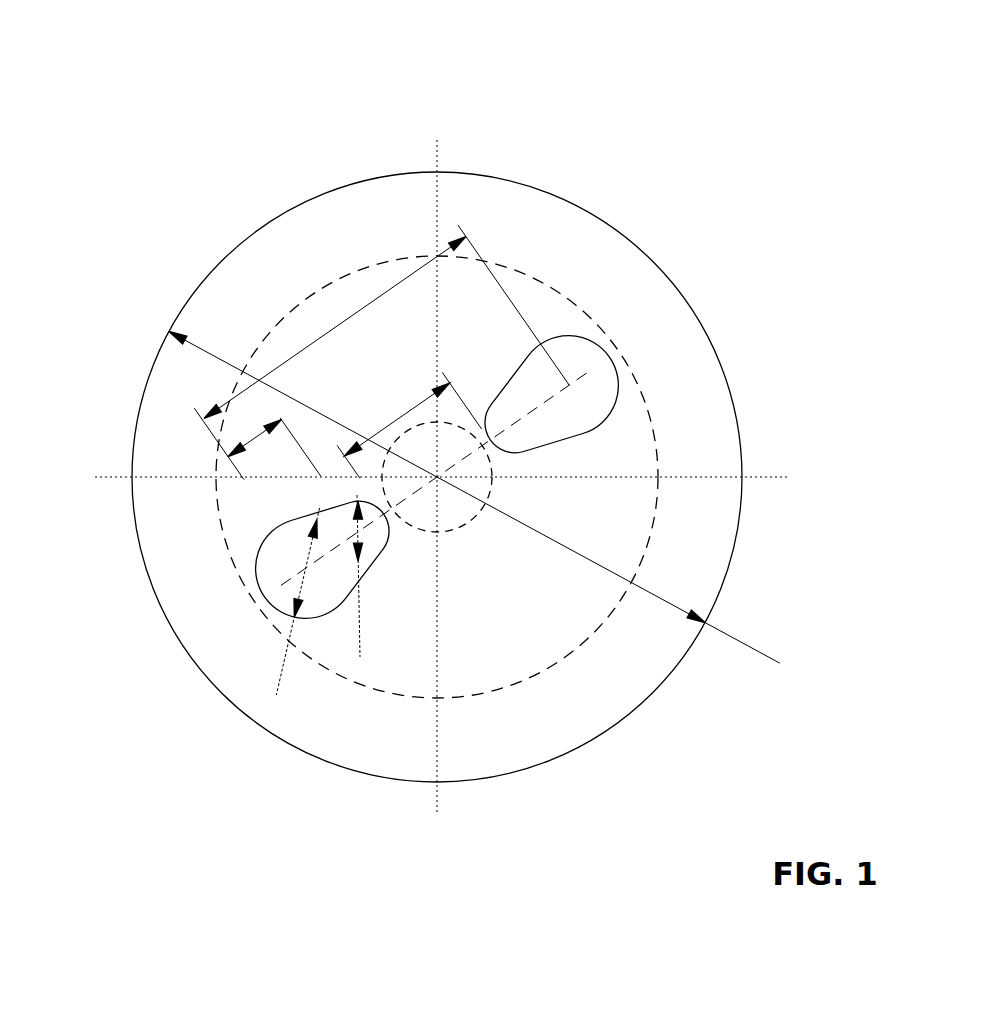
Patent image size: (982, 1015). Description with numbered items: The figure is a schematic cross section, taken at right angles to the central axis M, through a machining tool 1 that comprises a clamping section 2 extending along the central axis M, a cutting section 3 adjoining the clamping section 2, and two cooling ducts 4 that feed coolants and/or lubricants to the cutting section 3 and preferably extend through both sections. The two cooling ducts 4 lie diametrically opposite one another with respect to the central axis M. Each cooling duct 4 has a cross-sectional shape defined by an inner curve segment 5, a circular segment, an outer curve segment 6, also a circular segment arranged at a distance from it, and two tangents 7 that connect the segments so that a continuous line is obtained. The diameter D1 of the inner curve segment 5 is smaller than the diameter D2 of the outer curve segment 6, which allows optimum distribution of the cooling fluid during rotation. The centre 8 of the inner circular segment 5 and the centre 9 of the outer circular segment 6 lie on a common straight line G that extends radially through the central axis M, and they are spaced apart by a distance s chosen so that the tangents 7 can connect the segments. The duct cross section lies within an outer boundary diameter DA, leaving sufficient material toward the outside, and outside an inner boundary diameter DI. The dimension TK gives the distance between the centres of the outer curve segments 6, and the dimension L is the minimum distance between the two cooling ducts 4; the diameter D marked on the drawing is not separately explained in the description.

The machining tool 1 is at (590, 210).
The clamping section 2 is at (502, 402).
The cutting section 3 is at (502, 402).
The cooling duct 4 is at (451, 454).
The inner curve segment 5 is at (484, 435).
The outer curve segment 6 is at (451, 456).
The tangent 7 is at (451, 454).
The centre of inner circular segment 8 is at (451, 454).
The centre of outer circular segment 9 is at (523, 422).
The central axis M is at (439, 480).
The inner boundary diameter DI is at (477, 516).
The outer boundary diameter DA is at (282, 315).
The diameter D is at (451, 383).
The dimension TK is at (426, 461).
The dimension L is at (409, 425).
The distance s is at (274, 439).
The diameter of inner curve segment D1 is at (357, 568).
The diameter of outer curve segment D2 is at (288, 628).
The straight line G is at (304, 570).